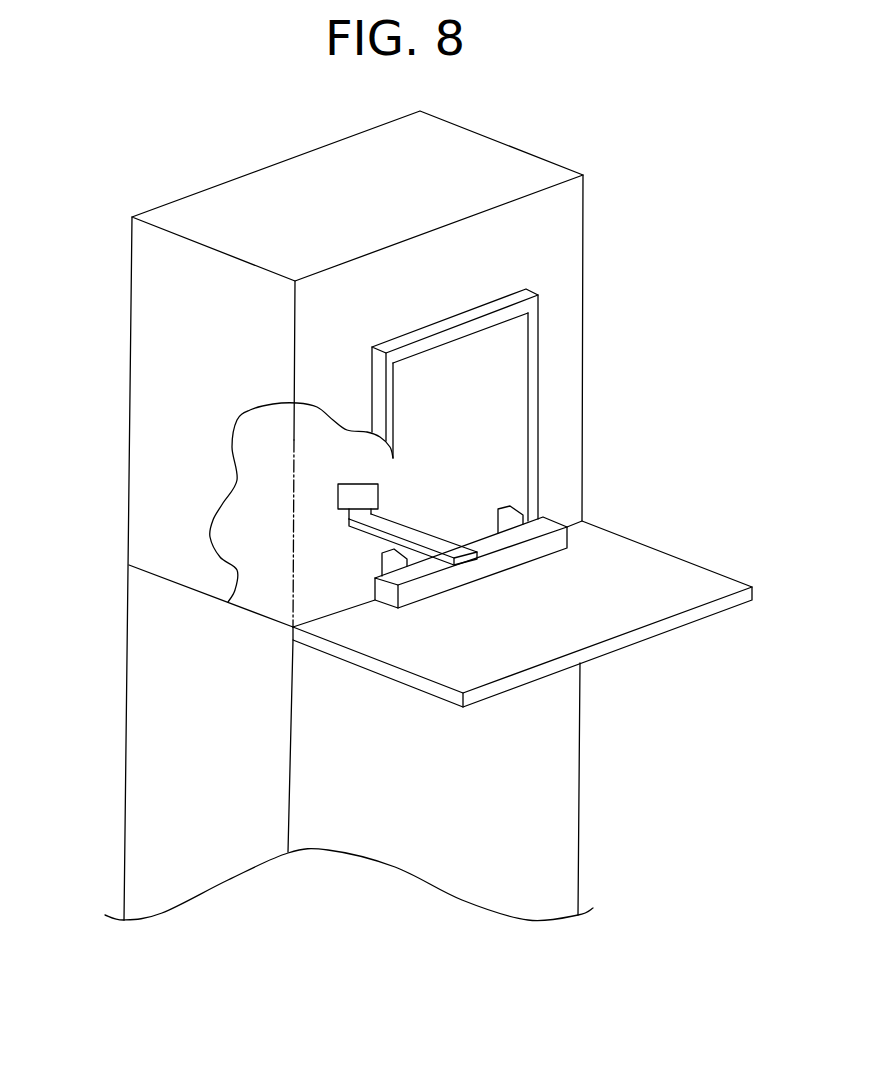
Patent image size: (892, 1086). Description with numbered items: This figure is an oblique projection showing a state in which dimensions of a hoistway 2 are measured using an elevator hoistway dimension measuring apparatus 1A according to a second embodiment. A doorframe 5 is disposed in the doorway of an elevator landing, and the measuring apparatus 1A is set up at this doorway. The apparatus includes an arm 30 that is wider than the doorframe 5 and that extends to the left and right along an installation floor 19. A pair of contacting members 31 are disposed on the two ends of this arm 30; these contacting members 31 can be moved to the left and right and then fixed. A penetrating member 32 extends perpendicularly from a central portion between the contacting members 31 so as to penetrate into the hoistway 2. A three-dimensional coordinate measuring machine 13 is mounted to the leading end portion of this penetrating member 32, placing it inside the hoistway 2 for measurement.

The measuring apparatus 1A is at (432, 604).
The hoistway 2 is at (454, 393).
The doorframe 5 is at (541, 316).
The three-dimensional coordinate measuring machine 13 is at (348, 483).
The installation floor 19 is at (688, 583).
The arm 30 is at (552, 542).
The contacting members 31 is at (522, 510).
The penetrating member 32 is at (407, 528).